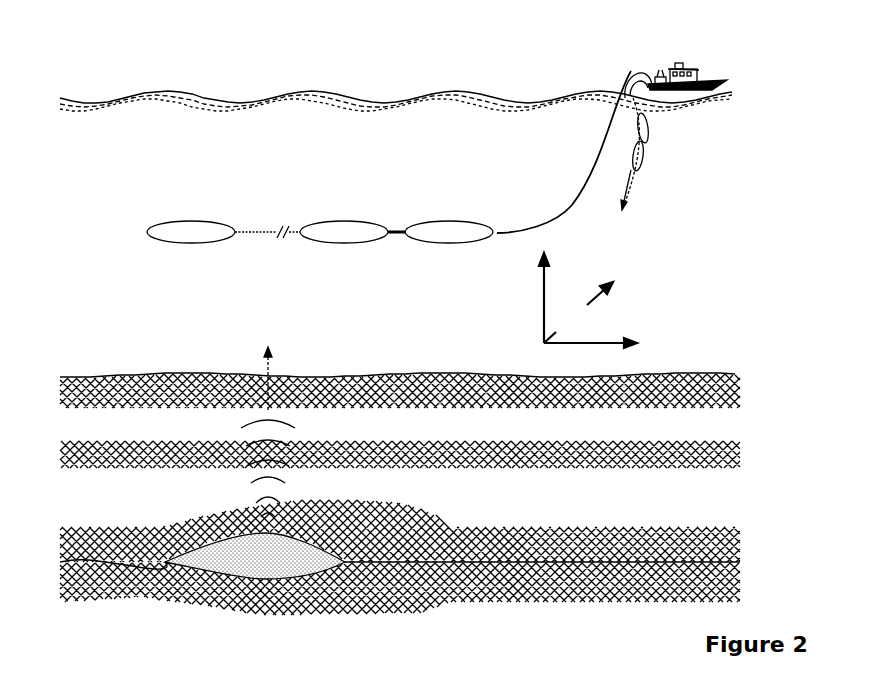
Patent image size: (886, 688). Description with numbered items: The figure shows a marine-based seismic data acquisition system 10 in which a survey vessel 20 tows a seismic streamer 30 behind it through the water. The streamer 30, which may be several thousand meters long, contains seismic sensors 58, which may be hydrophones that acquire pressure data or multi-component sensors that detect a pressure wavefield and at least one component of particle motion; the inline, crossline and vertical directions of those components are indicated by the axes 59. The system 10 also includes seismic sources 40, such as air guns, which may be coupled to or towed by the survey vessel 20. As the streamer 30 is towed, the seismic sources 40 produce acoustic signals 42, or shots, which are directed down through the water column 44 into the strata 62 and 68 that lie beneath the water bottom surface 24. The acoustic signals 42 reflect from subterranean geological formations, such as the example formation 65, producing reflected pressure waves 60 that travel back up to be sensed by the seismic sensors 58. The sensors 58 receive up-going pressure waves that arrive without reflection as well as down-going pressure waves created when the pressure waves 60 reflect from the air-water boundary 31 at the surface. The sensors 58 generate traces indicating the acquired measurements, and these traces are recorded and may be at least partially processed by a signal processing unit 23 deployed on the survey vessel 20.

The marine-based seismic data acquisition system 10 is at (226, 60).
The air-water boundary 31 is at (360, 89).
The survey vessel 20 is at (718, 82).
The signal processing unit 23 is at (660, 77).
The seismic streamer 30 is at (597, 162).
The seismic source 40 is at (648, 124).
The acoustic signal 42 is at (630, 188).
The water column 44 is at (647, 255).
The seismic sensor 58 is at (202, 221).
The axes 59 is at (527, 353).
The water bottom surface 24 is at (642, 375).
The pressure waves 60 is at (232, 490).
The strata 62 is at (382, 539).
The formation 65 is at (257, 565).
The strata 68 is at (382, 597).